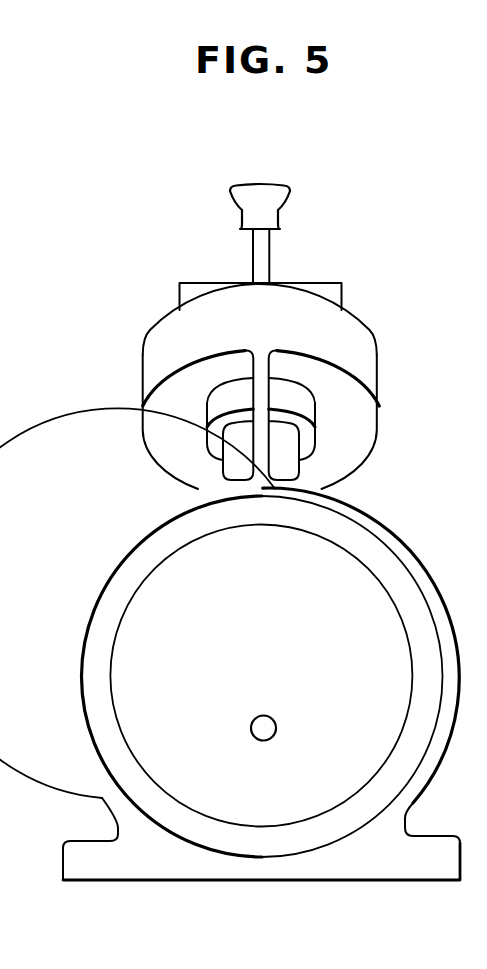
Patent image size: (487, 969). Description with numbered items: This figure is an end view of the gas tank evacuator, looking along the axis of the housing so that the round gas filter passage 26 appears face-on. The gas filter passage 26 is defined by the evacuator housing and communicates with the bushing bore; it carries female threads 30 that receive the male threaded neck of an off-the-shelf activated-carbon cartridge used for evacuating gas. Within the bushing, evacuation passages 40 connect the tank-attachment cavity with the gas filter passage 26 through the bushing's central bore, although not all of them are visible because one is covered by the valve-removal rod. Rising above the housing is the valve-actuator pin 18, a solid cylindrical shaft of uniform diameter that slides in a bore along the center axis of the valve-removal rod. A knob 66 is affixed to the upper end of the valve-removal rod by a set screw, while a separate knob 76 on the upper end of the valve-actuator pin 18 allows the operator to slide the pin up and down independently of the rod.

The knob 76 is at (267, 195).
The valve-actuator pin 18 is at (262, 260).
The knob 66 is at (333, 283).
The female threads 30 is at (139, 548).
The evacuation passages 40 is at (251, 733).
The gas filter passage 26 is at (387, 735).